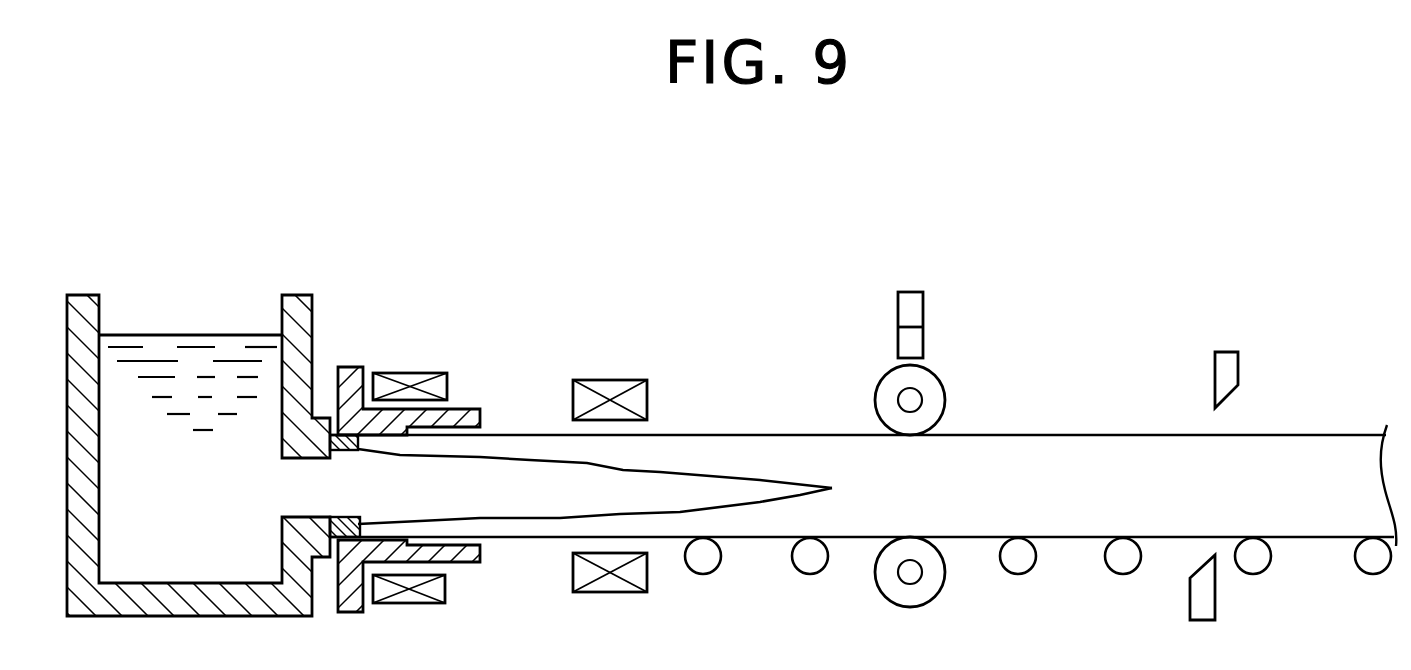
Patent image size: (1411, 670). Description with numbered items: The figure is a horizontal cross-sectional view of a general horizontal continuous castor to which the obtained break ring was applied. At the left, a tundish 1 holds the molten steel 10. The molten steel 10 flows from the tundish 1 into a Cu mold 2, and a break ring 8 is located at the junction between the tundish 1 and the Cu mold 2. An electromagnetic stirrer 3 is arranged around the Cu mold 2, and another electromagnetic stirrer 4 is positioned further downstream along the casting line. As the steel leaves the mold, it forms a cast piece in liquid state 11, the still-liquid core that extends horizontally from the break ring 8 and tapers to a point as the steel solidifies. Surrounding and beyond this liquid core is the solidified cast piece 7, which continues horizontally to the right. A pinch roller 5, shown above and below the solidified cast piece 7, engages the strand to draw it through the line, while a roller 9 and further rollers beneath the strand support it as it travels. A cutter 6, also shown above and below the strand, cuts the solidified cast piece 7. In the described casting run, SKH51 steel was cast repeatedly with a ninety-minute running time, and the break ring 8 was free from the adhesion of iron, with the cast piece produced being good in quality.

The tundish 1 is at (83, 310).
The Cu mold 2 is at (357, 368).
The electromagnetic stirrer 3 is at (428, 373).
The electromagnetic stirrer 4 is at (620, 392).
The pinch roller 5 is at (927, 390).
The cutter 6 is at (1222, 381).
The solidified cast piece 7 is at (1318, 458).
The break ring 8 is at (347, 452).
The roller 9 is at (707, 556).
The molten steel 10 is at (205, 498).
The cast piece in liquid state 11 is at (715, 488).